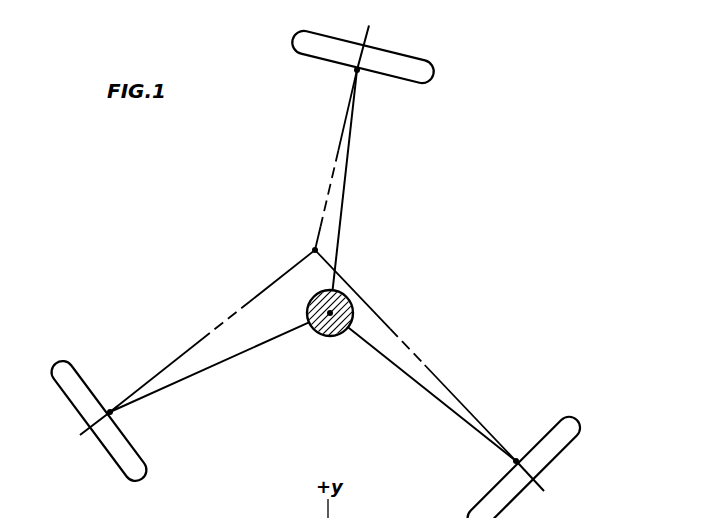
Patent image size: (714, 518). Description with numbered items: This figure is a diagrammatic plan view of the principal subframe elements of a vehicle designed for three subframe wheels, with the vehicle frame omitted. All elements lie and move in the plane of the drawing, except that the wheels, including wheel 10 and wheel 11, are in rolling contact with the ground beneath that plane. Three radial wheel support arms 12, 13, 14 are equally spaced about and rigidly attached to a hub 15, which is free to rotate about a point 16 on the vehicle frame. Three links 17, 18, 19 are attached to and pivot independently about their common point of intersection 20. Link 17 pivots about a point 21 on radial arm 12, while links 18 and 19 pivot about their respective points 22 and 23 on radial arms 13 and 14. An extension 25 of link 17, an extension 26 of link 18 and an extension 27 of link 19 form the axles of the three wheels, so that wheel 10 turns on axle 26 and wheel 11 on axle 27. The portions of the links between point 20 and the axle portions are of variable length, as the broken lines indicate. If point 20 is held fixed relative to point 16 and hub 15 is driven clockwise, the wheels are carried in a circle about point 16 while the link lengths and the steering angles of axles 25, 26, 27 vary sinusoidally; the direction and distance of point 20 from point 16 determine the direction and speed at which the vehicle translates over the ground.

The wheel 10 is at (113, 467).
The wheel 11 is at (403, 53).
The radial wheel support arm 12 is at (458, 420).
The radial wheel support arm 13 is at (184, 384).
The radial wheel support arm 14 is at (345, 188).
The hub 15 is at (332, 337).
The point 16 is at (333, 312).
The link 17 is at (395, 332).
The link 18 is at (223, 322).
The link 19 is at (330, 188).
The point of intersection 20 is at (313, 248).
The pivot point 21 is at (518, 458).
The pivot point 22 is at (110, 407).
The pivot point 23 is at (359, 74).
The extension of link 17 25 is at (538, 479).
The extension of link 18 26 is at (90, 427).
The extension of link 19 27 is at (363, 56).